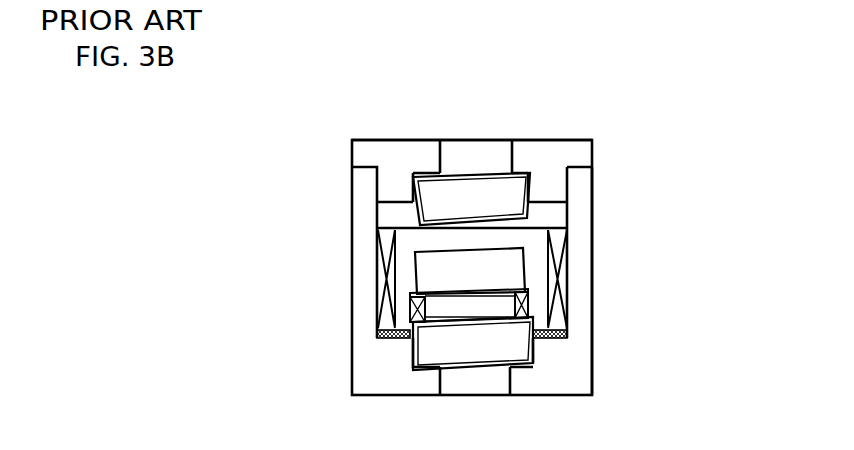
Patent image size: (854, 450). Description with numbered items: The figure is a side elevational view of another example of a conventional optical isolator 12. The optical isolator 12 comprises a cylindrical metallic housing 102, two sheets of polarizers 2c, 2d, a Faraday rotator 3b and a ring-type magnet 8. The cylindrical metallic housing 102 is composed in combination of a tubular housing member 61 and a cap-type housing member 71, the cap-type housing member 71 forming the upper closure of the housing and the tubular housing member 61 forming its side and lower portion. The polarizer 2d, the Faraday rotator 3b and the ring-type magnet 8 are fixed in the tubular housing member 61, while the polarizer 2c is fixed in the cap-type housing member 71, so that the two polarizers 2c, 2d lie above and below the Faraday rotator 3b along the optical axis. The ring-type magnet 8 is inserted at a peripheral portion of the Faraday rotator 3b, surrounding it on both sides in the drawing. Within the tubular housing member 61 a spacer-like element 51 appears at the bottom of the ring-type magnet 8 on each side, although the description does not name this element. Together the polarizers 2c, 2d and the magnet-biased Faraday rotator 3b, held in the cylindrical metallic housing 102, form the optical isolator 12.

The optical isolator 12 is at (322, 138).
The cap-type housing member 71 is at (560, 157).
The tubular housing member 61 is at (583, 195).
The cylindrical metallic housing 102 is at (700, 105).
The polarizer 2c is at (443, 212).
The Faraday rotator 3b is at (510, 273).
The polarizer 2d is at (513, 348).
The ring-type magnet 8 is at (388, 310).
The spacer 51 is at (375, 338).